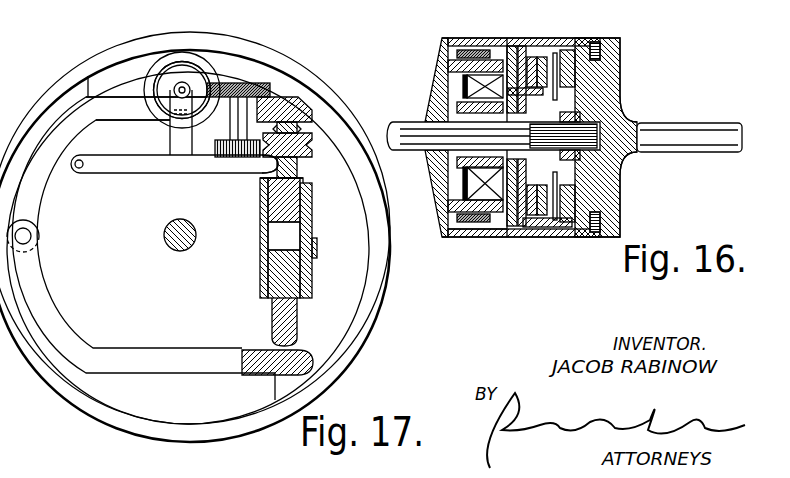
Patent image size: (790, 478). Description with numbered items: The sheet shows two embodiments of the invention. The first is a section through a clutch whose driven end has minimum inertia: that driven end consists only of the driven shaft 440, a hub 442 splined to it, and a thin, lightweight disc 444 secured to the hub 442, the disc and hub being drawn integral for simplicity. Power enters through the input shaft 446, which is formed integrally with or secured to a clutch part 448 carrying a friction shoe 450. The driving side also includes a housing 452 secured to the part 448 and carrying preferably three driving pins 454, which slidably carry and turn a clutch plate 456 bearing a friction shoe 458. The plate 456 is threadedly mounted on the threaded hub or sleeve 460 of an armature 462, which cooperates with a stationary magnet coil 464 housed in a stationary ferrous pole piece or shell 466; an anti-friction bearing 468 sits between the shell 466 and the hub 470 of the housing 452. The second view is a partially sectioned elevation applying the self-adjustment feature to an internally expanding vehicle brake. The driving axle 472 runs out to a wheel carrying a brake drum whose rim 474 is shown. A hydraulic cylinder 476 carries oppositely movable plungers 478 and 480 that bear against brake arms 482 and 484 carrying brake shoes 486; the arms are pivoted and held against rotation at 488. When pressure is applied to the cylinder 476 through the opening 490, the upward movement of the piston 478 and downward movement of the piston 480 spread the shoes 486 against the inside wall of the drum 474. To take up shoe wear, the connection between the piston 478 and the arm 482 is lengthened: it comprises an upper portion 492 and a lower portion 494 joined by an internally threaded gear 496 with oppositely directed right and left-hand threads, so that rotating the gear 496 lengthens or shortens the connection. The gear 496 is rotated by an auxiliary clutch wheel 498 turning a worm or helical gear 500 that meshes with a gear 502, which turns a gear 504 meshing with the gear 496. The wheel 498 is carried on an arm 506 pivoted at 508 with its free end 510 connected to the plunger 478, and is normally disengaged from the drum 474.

In FIG. 16, the driven shaft 440 is at (410, 123).
In FIG. 16, the hub 442 is at (580, 115).
In FIG. 16, the thin lightweight disc 444 is at (582, 97).
In FIG. 16, the input shaft 446 is at (697, 127).
In FIG. 16, the clutch part 448 is at (573, 210).
In FIG. 16, the friction shoe 450 is at (567, 237).
In FIG. 16, the housing 452 is at (532, 38).
In FIG. 16, the driving pins 454 is at (522, 38).
In FIG. 16, the clutch plate 456 is at (527, 237).
In FIG. 16, the friction shoe 458 is at (543, 237).
In FIG. 16, the threaded hub or sleeve 460 is at (460, 167).
In FIG. 16, the armature 462 is at (437, 60).
In FIG. 16, the magnet coil 464 is at (468, 236).
In FIG. 16, the pole piece or shell 466 is at (487, 240).
In FIG. 16, the anti-friction bearing 468 is at (463, 190).
In FIG. 16, the hub of the housing 470 is at (467, 190).
In FIG. 17, the driving axle 472 is at (173, 253).
In FIG. 17, the brake drum rim 474 is at (202, 37).
In FIG. 17, the cylinder 476 is at (308, 223).
In FIG. 17, the plunger 478 is at (307, 197).
In FIG. 17, the plunger 480 is at (270, 278).
In FIG. 17, the brake arm 482 is at (115, 115).
In FIG. 17, the brake arm 484 is at (113, 356).
In FIG. 17, the brake shoes 486 is at (112, 72).
In FIG. 17, the pivot 488 is at (31, 235).
In FIG. 17, the opening 490 is at (316, 248).
In FIG. 17, the upper portion 492 is at (300, 128).
In FIG. 17, the lower portion 494 is at (305, 167).
In FIG. 17, the internally threaded gear 496 is at (313, 147).
In FIG. 17, the wheel 498 is at (173, 60).
In FIG. 17, the worm or helical gear 500 is at (200, 77).
In FIG. 17, the gear 502 is at (243, 83).
In FIG. 17, the gear 504 is at (227, 160).
In FIG. 17, the arm 506 is at (148, 170).
In FIG. 17, the pivot 508 is at (78, 170).
In FIG. 17, the free end 510 is at (272, 170).